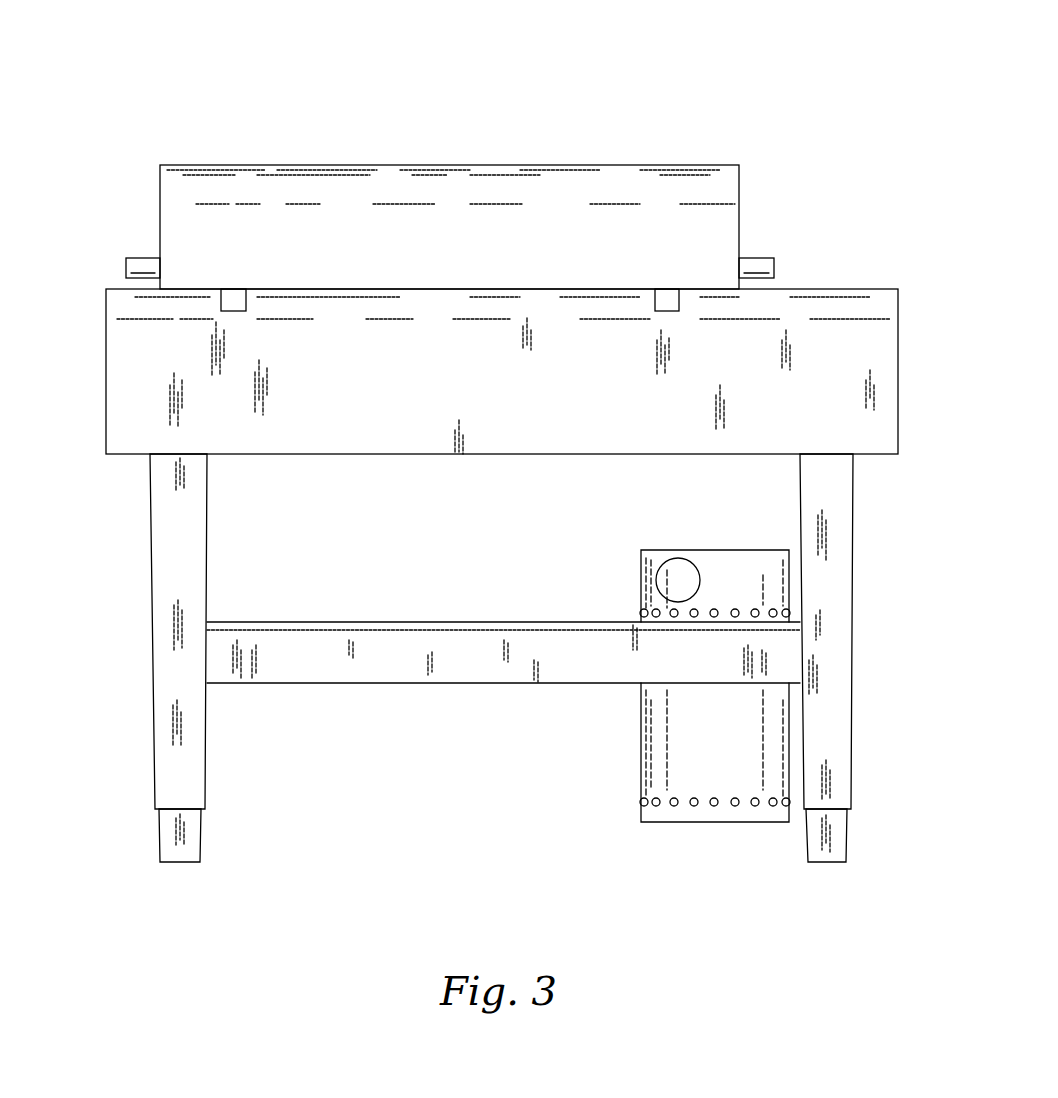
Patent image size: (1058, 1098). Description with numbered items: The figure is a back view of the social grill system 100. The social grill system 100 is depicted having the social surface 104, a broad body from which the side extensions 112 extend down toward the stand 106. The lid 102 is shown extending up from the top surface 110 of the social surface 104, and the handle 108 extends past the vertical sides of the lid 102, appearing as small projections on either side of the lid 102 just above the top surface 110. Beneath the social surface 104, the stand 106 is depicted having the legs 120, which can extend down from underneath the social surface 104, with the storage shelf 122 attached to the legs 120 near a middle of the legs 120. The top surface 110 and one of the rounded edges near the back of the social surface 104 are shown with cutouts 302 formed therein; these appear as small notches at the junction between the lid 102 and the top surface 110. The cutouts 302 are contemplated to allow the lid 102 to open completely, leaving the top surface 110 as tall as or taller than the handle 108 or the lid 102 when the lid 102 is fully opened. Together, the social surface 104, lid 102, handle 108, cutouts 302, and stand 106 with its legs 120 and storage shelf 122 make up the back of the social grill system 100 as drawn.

The social grill system 100 is at (838, 82).
The lid 102 is at (444, 183).
The social surface 104 is at (80, 306).
The stand 106 is at (880, 724).
The handle 108 is at (138, 258).
The top surface 110 is at (852, 289).
The side extensions 112 is at (898, 417).
The legs 120 is at (156, 786).
The storage shelf 122 is at (321, 664).
The cutouts 302 is at (254, 298).